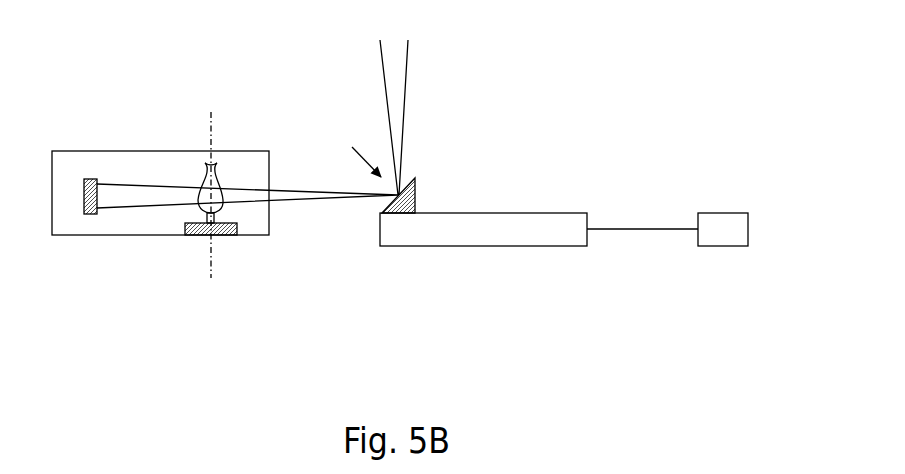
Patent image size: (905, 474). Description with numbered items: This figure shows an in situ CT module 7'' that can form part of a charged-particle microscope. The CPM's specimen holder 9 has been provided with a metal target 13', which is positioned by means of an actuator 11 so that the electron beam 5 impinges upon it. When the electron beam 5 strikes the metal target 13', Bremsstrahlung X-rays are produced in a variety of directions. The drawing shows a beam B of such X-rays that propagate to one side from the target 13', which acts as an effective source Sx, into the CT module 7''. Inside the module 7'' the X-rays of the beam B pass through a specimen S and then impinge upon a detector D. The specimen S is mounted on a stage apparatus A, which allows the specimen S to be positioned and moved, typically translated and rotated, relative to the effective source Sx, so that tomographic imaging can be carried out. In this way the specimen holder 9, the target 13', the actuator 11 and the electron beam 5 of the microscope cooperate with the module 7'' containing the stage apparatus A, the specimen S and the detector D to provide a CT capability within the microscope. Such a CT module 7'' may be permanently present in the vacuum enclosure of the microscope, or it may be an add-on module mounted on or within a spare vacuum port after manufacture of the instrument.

The in situ CT module 7'' is at (160, 156).
The detector D is at (93, 215).
The beam of X-rays B is at (292, 190).
The stage apparatus A is at (195, 235).
The specimen S is at (220, 212).
The effective source Sx is at (353, 144).
The metal target 13' is at (438, 180).
The electron beam 5 is at (392, 78).
The specimen holder 9 is at (432, 233).
The actuator 11 is at (710, 235).